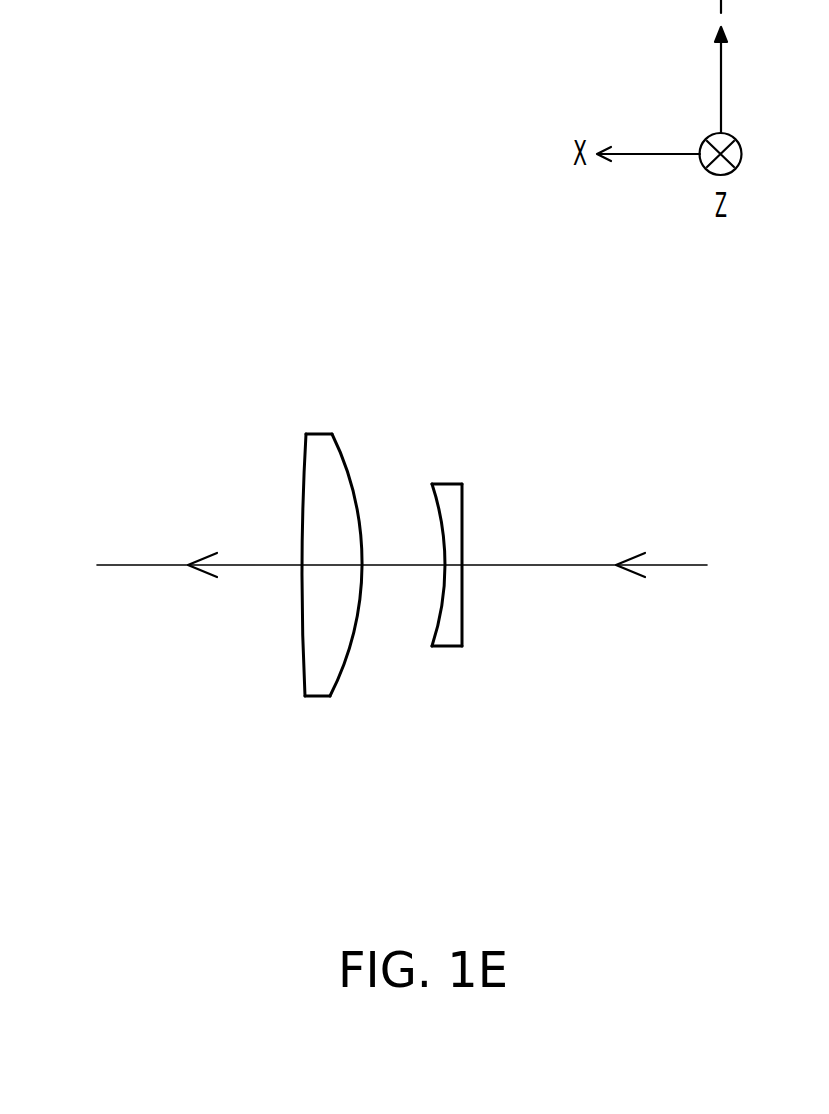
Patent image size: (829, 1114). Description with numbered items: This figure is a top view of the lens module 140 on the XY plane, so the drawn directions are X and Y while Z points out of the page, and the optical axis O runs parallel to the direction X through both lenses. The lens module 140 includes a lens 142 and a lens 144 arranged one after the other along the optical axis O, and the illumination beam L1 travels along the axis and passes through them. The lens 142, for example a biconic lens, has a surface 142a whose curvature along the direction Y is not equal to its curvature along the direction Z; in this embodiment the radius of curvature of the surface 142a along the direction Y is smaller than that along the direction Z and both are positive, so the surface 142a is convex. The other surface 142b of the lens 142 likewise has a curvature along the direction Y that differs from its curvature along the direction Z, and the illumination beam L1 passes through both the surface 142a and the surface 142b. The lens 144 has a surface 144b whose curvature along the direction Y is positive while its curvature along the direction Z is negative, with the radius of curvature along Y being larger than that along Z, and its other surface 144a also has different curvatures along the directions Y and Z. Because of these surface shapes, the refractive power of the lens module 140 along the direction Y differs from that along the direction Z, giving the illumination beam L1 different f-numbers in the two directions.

The lens module 140 is at (424, 313).
The lens 142 is at (326, 510).
The surface of the lens 142a is at (361, 485).
The another surface of the lens 142b is at (304, 479).
The lens 144 is at (450, 569).
The another surface of the lens 144a is at (477, 504).
The surface of the lens 144b is at (427, 606).
The optical axis O is at (577, 565).
The illumination beam L1 is at (695, 565).